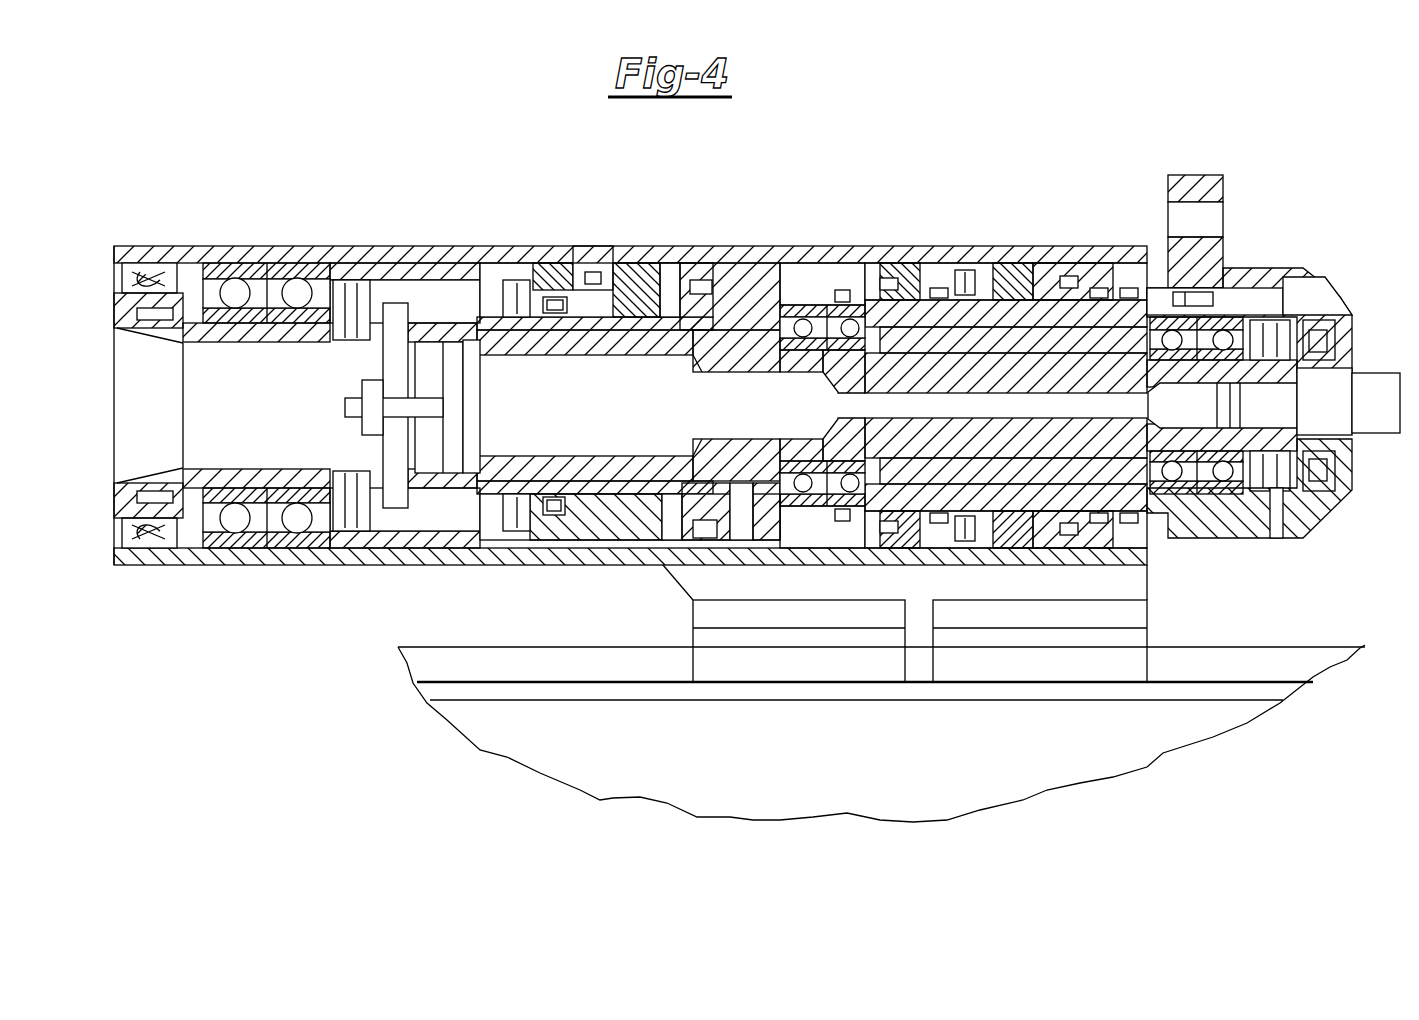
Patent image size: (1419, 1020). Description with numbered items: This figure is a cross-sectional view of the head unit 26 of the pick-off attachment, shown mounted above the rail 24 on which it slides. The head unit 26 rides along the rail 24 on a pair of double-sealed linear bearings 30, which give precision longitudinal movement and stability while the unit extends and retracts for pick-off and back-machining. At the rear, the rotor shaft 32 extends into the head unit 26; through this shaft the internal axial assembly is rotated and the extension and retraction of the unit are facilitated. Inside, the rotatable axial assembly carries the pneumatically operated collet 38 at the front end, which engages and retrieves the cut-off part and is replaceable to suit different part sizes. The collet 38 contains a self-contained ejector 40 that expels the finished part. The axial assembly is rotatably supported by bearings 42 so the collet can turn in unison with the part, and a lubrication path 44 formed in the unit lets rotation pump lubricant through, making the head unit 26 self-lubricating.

The rail 24 is at (1328, 664).
The head unit 26 is at (336, 218).
The double-sealed linear bearings 30 is at (803, 667).
The rotor shaft 32 is at (1380, 370).
The pneumatically operated collet 38 is at (148, 487).
The self-contained ejector 40 is at (366, 378).
The bearings 42 is at (848, 314).
The lubrication path 44 is at (180, 262).